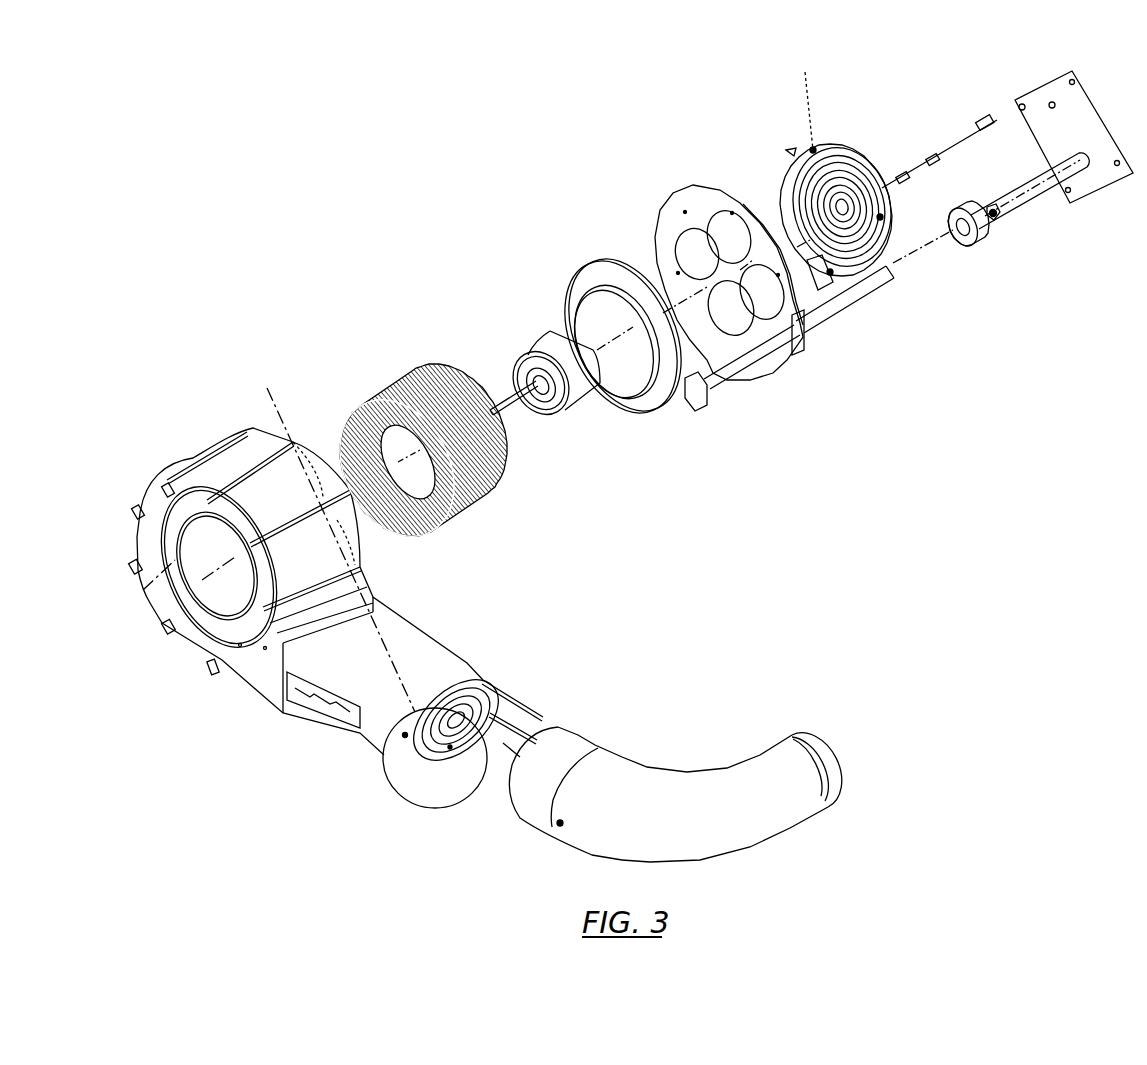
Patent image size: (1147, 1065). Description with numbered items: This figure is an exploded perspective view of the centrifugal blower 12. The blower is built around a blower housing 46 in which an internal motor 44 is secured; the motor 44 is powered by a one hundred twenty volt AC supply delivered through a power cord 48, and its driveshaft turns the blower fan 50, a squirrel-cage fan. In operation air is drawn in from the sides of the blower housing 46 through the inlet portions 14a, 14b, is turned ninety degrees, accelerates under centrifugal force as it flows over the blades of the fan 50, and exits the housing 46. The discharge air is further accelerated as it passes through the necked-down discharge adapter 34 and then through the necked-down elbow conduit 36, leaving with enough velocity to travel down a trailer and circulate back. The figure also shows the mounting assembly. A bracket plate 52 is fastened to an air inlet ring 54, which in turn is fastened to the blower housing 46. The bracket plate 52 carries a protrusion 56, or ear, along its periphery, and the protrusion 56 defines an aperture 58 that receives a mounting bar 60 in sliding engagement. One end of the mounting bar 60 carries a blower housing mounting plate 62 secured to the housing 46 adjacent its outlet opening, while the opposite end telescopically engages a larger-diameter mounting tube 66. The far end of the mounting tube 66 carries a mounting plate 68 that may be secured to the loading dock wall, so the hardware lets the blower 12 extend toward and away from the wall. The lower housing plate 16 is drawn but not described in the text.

The centrifugal blower 12 is at (226, 211).
The inlet portion 14a is at (322, 437).
The inlet portion 14b is at (188, 557).
The mounting plate 16 is at (255, 677).
The discharge adapter 34 is at (422, 638).
The elbow conduit 36 is at (573, 740).
The motor 44 is at (540, 343).
The blower housing 46 is at (227, 462).
The power cord 48 is at (947, 148).
The blower fan 50 is at (478, 448).
The bracket plate 52 is at (702, 205).
The air inlet ring 54 is at (594, 277).
The protrusion 56 is at (807, 330).
The aperture 58 is at (797, 323).
The mounting bar 60 is at (843, 305).
The blower housing mounting plate 62 is at (698, 400).
The mounting tube 66 is at (1016, 200).
The mounting plate 68 is at (1088, 177).